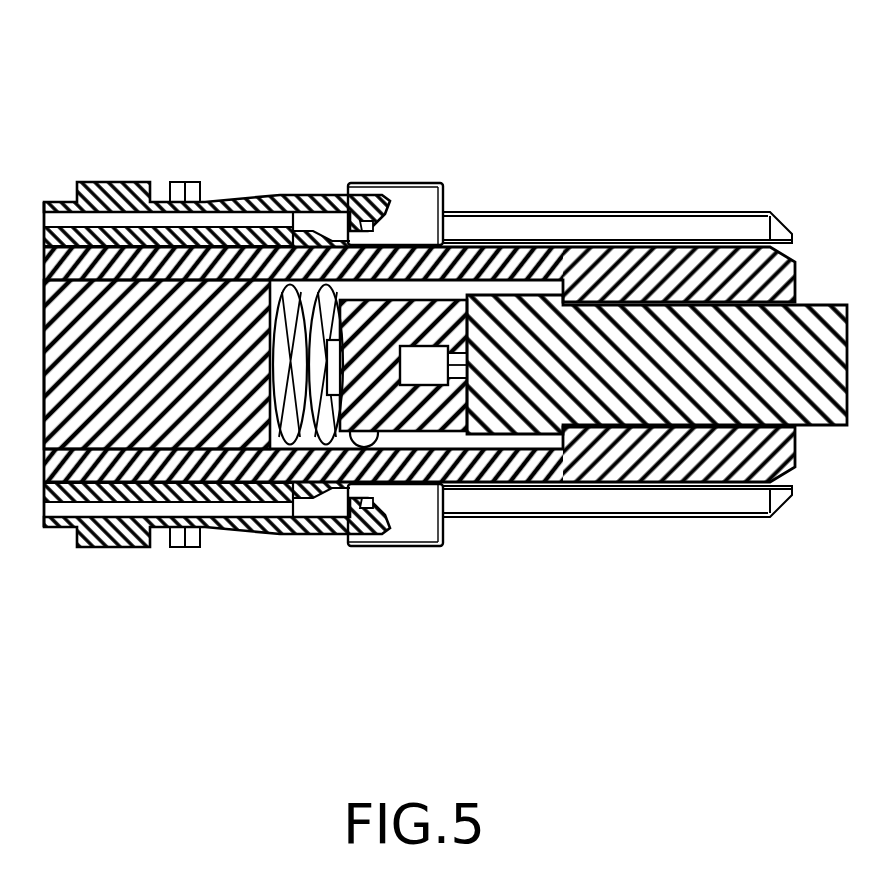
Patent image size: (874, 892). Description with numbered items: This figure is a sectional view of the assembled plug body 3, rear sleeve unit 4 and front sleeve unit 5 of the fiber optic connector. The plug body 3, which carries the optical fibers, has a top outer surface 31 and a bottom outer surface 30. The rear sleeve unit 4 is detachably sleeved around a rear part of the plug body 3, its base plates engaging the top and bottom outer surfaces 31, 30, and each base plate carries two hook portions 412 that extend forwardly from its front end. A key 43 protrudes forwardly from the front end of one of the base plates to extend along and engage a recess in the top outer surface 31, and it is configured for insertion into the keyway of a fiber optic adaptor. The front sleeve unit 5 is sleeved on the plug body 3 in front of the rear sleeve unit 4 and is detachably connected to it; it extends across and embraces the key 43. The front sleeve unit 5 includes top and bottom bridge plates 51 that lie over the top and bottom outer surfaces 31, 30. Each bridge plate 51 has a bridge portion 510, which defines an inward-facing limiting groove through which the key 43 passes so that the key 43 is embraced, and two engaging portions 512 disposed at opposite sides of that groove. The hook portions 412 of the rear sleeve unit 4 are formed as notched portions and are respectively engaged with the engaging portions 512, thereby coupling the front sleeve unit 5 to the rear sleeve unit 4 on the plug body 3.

The plug body 3 is at (419, 386).
The bottom outer surface 30 is at (750, 485).
The top outer surface 31 is at (714, 275).
The rear sleeve unit 4 is at (231, 341).
The hook portion 412 is at (371, 204).
The key 43 is at (680, 212).
The front sleeve unit 5 is at (443, 364).
The bridge plate 51 is at (449, 435).
The bridge portion 510 is at (432, 192).
The engaging portion 512 is at (369, 229).